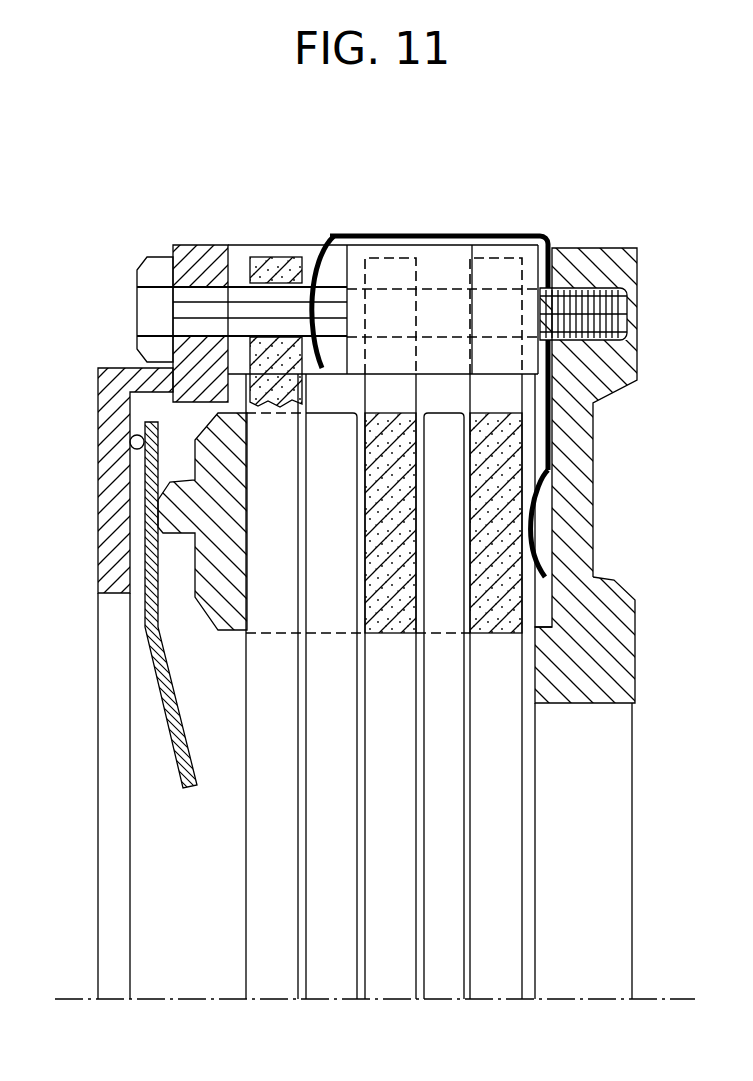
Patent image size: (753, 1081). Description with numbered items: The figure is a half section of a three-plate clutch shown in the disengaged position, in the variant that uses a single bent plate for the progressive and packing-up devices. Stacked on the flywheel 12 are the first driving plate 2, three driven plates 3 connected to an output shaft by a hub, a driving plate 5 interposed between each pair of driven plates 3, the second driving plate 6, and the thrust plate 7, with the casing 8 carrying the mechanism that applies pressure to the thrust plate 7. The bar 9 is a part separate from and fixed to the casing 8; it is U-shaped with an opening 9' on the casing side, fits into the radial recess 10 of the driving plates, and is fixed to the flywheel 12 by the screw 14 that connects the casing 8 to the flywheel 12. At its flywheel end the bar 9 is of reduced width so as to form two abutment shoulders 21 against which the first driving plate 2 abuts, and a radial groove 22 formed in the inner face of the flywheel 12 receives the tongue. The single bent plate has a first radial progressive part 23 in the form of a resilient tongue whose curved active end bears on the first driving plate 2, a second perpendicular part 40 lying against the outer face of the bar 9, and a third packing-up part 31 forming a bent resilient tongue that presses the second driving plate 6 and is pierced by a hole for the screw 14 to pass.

The first driving plate 2 is at (487, 973).
The driven plates 3 is at (323, 973).
The driving plate 5 is at (383, 973).
The second driving plate 6 is at (266, 973).
The thrust plate 7 is at (218, 580).
The casing 8 is at (110, 500).
The bar 9 is at (355, 284).
The opening 9' is at (437, 270).
The radial recess 10 is at (503, 400).
The flywheel 12 is at (587, 655).
The screw 14 is at (607, 313).
The abutment shoulders 21 is at (483, 273).
The radial groove 22 is at (543, 597).
The progressive part 23 is at (537, 492).
The packing-up part 31 is at (310, 282).
The perpendicular part 40 is at (450, 233).